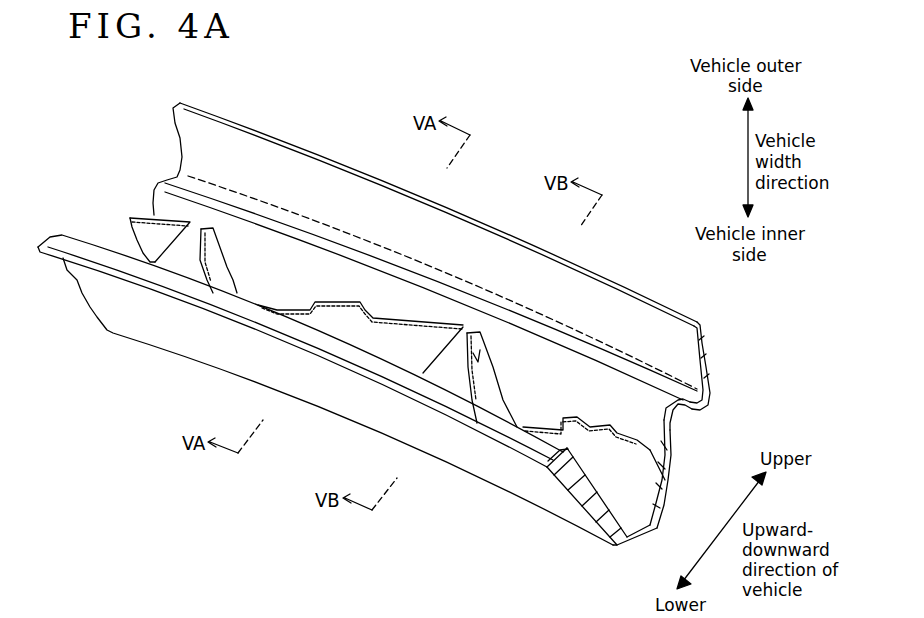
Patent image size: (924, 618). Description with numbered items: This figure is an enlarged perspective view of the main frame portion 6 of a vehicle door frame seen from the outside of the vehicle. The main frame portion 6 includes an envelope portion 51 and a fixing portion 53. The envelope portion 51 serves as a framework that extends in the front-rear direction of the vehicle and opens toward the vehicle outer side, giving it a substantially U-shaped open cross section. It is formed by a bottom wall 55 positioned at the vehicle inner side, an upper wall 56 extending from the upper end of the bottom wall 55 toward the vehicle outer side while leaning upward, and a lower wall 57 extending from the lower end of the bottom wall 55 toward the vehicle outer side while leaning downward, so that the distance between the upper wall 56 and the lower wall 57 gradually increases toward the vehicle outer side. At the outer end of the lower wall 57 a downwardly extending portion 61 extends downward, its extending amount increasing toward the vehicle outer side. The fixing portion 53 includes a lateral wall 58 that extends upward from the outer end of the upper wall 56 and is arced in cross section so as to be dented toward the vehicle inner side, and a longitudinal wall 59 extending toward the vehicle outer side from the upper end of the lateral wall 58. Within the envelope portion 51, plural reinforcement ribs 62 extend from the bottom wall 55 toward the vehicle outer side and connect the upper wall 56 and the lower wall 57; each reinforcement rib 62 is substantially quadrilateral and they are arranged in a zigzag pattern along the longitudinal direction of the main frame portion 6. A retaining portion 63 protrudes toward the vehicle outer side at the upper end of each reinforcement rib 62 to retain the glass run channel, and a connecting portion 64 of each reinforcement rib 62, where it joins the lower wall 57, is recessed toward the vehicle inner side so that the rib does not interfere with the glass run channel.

The main frame portion 6 is at (639, 192).
The envelope portion 51 is at (607, 547).
The fixing portion 53 is at (692, 322).
The bottom wall 55 is at (632, 542).
The upper wall 56 is at (667, 470).
The lower wall 57 is at (590, 507).
The lateral wall 58 is at (706, 406).
The longitudinal wall 59 is at (708, 365).
The downwardly extending portion 61 is at (550, 467).
The reinforcement rib 62 is at (217, 292).
The retaining portion 63 is at (333, 307).
The connecting portion 64 is at (300, 318).